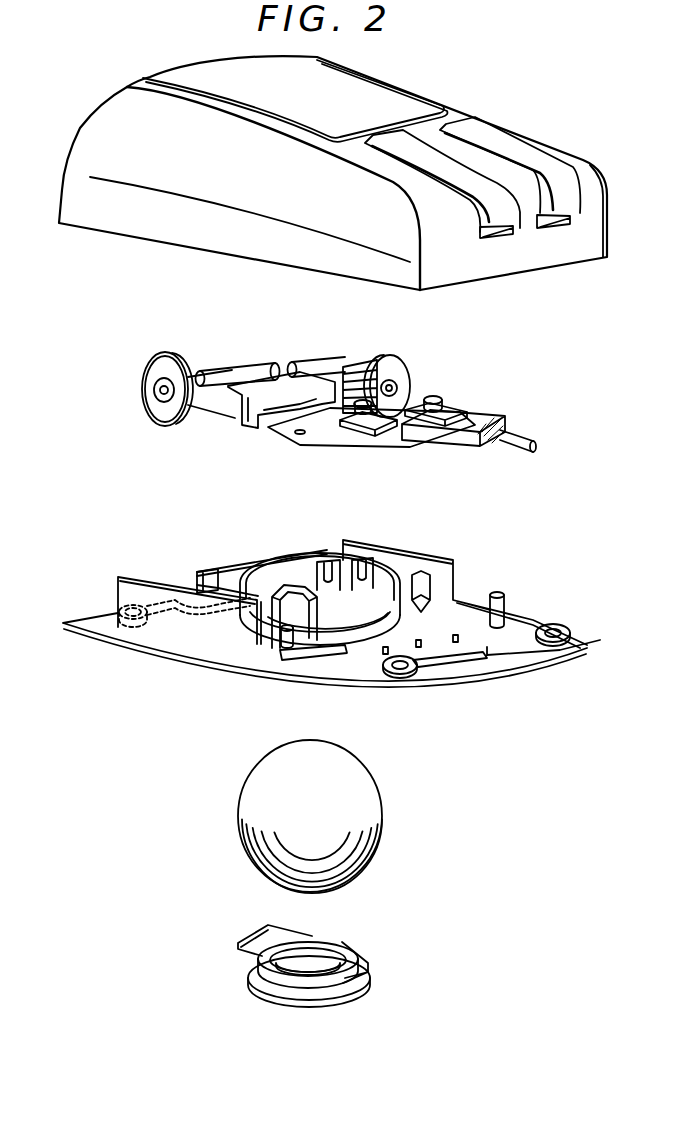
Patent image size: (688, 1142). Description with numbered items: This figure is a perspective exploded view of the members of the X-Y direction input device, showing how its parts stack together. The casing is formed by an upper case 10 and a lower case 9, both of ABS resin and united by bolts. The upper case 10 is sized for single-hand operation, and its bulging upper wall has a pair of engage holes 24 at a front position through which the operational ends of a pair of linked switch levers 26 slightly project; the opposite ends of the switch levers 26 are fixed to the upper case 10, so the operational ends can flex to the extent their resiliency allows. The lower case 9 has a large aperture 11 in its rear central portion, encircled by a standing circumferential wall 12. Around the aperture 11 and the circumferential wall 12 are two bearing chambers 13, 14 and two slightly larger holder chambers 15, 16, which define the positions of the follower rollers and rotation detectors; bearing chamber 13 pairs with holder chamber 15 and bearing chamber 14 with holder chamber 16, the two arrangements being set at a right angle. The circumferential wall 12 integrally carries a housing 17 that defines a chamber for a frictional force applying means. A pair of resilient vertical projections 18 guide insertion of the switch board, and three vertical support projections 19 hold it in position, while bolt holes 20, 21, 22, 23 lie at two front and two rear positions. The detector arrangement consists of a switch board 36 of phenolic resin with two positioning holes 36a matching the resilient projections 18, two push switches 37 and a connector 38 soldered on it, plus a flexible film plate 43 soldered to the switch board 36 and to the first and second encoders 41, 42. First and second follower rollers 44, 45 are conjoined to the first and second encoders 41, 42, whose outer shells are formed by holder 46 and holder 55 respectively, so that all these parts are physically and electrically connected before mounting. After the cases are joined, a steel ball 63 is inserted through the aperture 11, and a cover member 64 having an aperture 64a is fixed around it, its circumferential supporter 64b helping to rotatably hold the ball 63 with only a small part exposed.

The lower case 9 is at (120, 640).
The upper case 10 is at (102, 116).
The aperture 11 is at (325, 630).
The circumferential wall 12 is at (365, 646).
The bearing chamber 13 is at (362, 562).
The bearing chamber 14 is at (320, 563).
The holder chamber 15 is at (424, 576).
The holder chamber 16 is at (216, 576).
The housing 17 is at (272, 610).
The resilient vertical projections 18 is at (498, 596).
The vertical support projections 19 is at (388, 653).
The bolt hole 20 is at (560, 631).
The bolt hole 21 is at (403, 673).
The bolt hole 22 is at (184, 598).
The bolt hole 23 is at (133, 604).
The engage holes 24 is at (508, 232).
The switch levers 26 is at (420, 134).
The switch board 36 is at (345, 441).
The positioning holes 36a is at (300, 436).
The push switches 37 is at (372, 423).
The connector 38 is at (470, 418).
The first encoder 41 is at (408, 350).
The second encoder 42 is at (129, 405).
The flexible film plate 43 is at (257, 432).
The first follower roller 44 is at (310, 363).
The second follower roller 45 is at (240, 366).
The holder 46 is at (372, 365).
The holder 55 is at (170, 352).
The ball 63 is at (383, 792).
The cover member 64 is at (350, 948).
The aperture 64a is at (307, 968).
The circumferential supporter 64b is at (267, 978).